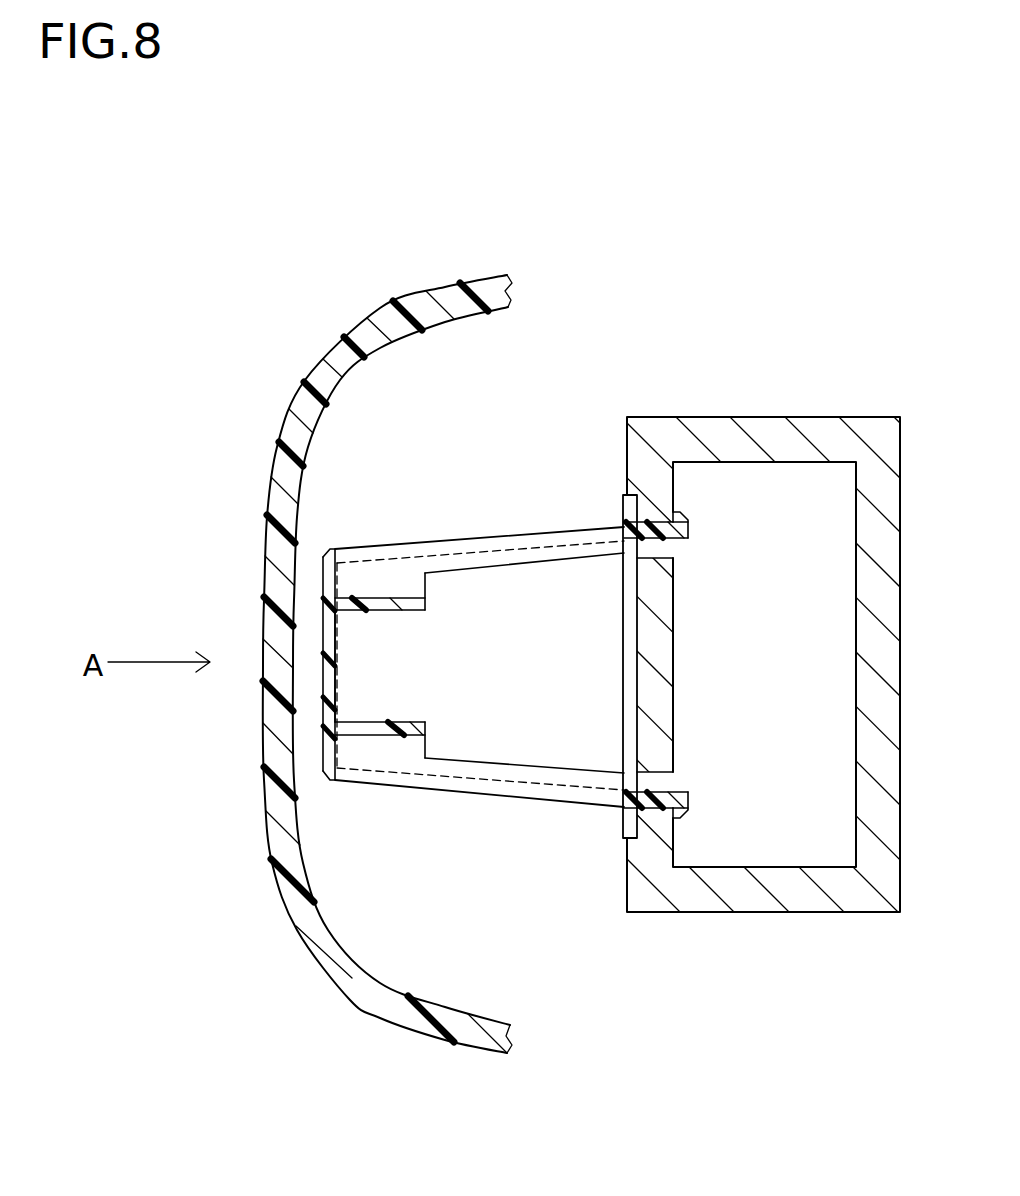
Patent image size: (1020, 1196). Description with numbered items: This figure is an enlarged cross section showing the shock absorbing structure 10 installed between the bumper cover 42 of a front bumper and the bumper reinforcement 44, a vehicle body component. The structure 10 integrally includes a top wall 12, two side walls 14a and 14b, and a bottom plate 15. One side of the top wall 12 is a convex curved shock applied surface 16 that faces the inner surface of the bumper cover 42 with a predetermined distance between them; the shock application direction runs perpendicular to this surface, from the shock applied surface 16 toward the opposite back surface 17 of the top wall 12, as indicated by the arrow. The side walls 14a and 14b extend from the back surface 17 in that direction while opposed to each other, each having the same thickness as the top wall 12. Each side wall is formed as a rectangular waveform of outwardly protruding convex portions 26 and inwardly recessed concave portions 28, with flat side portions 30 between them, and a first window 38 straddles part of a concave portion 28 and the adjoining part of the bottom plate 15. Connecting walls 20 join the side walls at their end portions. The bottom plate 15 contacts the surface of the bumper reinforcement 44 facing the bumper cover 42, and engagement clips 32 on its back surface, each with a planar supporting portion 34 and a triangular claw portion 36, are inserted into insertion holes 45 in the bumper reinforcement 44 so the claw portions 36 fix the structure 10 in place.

The shock absorbing structure 10 is at (338, 517).
The top wall 12 is at (318, 722).
The side wall 14a is at (568, 522).
The side wall 14b is at (521, 812).
The bottom plate 15 is at (628, 512).
The shock applied surface 16 is at (323, 642).
The back surface 17 is at (338, 690).
The connecting wall 20 is at (553, 722).
The convex portion 26 is at (436, 868).
The concave portion 28 is at (338, 815).
The side portion 30 is at (392, 578).
The engagement clip 32 is at (688, 526).
The supporting portion 34 is at (660, 520).
The claw portion 36 is at (700, 533).
The first window 38 is at (474, 578).
The bumper cover 42 is at (262, 577).
The bumper reinforcement 44 is at (803, 890).
The insertion hole 45 is at (660, 552).